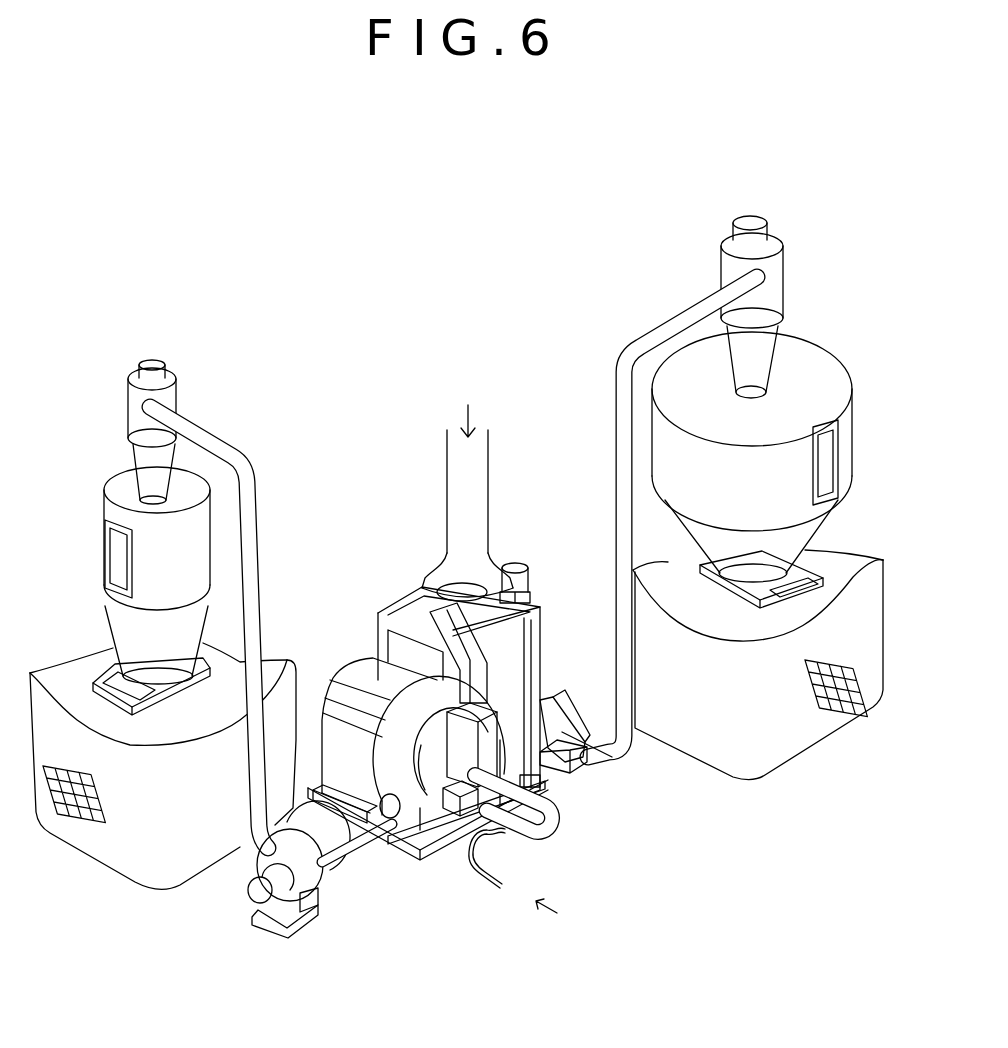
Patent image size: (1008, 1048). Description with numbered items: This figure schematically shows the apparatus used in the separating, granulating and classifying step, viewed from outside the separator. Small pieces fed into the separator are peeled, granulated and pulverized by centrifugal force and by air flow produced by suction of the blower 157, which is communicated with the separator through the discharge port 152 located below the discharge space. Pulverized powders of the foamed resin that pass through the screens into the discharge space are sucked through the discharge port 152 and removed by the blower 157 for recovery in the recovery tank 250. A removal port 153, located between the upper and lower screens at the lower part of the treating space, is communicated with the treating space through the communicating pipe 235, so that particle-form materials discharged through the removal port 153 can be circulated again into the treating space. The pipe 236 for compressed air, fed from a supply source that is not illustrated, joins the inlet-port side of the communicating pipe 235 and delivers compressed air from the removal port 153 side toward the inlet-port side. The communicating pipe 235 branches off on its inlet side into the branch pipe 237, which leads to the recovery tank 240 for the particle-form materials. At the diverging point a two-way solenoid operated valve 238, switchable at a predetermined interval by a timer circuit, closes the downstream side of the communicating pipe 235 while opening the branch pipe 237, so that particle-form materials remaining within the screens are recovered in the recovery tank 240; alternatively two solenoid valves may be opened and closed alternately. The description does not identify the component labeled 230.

The discharge port 152 is at (388, 840).
The removal port 153 is at (463, 848).
The blower 157 is at (332, 883).
The motor 230 is at (423, 823).
The communicating pipe 235 is at (560, 823).
The pipe for compressed air 236 is at (495, 862).
The branch pipe 237 is at (618, 440).
The two way solenoid operated valve 238 is at (570, 775).
The recovery tank 240 is at (857, 405).
The recovery tank 250 is at (100, 512).